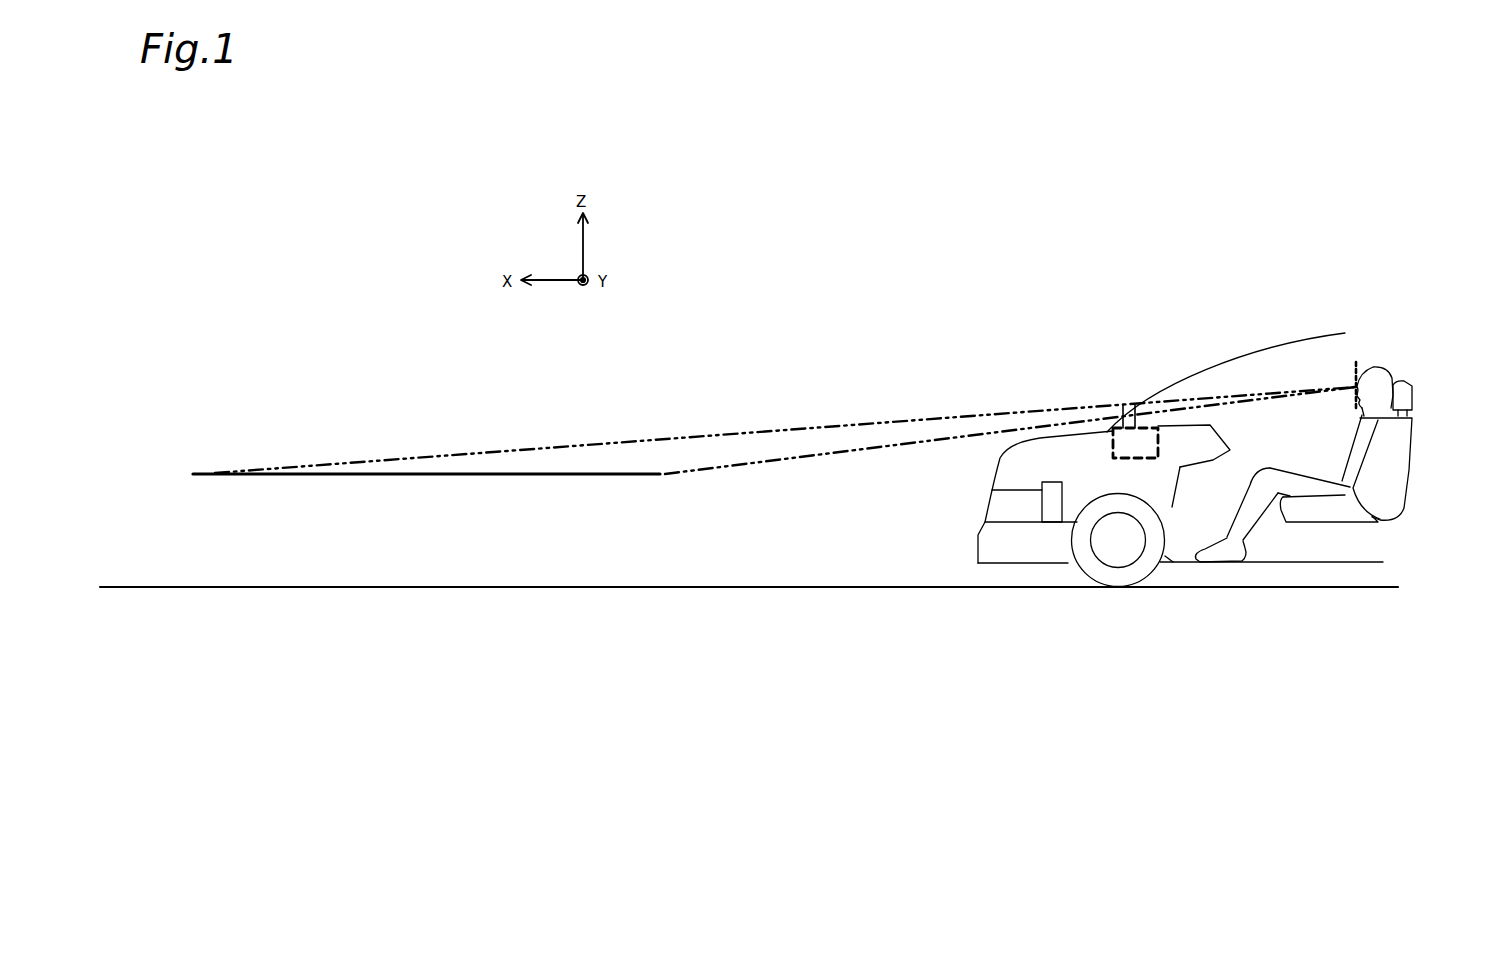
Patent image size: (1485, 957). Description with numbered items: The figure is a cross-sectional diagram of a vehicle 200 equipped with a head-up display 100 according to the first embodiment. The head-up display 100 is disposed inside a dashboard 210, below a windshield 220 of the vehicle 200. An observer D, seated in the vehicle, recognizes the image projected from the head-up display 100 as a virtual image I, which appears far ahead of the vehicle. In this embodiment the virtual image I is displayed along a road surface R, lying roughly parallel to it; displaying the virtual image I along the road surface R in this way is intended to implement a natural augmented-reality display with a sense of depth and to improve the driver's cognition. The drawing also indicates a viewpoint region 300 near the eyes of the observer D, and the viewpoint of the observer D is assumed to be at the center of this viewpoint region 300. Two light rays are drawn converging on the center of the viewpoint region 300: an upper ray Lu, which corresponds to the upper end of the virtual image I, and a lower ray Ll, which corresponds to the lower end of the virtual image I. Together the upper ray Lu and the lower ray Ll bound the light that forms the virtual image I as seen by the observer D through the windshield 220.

The head-up display 100 is at (1113, 441).
The vehicle 200 is at (979, 541).
The dashboard 210 is at (1207, 428).
The windshield 220 is at (1207, 366).
The viewpoint region 300 is at (1358, 362).
The observer D is at (1358, 387).
The virtual image I is at (520, 478).
The road surface R is at (572, 587).
The upper ray Lu is at (755, 430).
The lower ray Ll is at (818, 457).